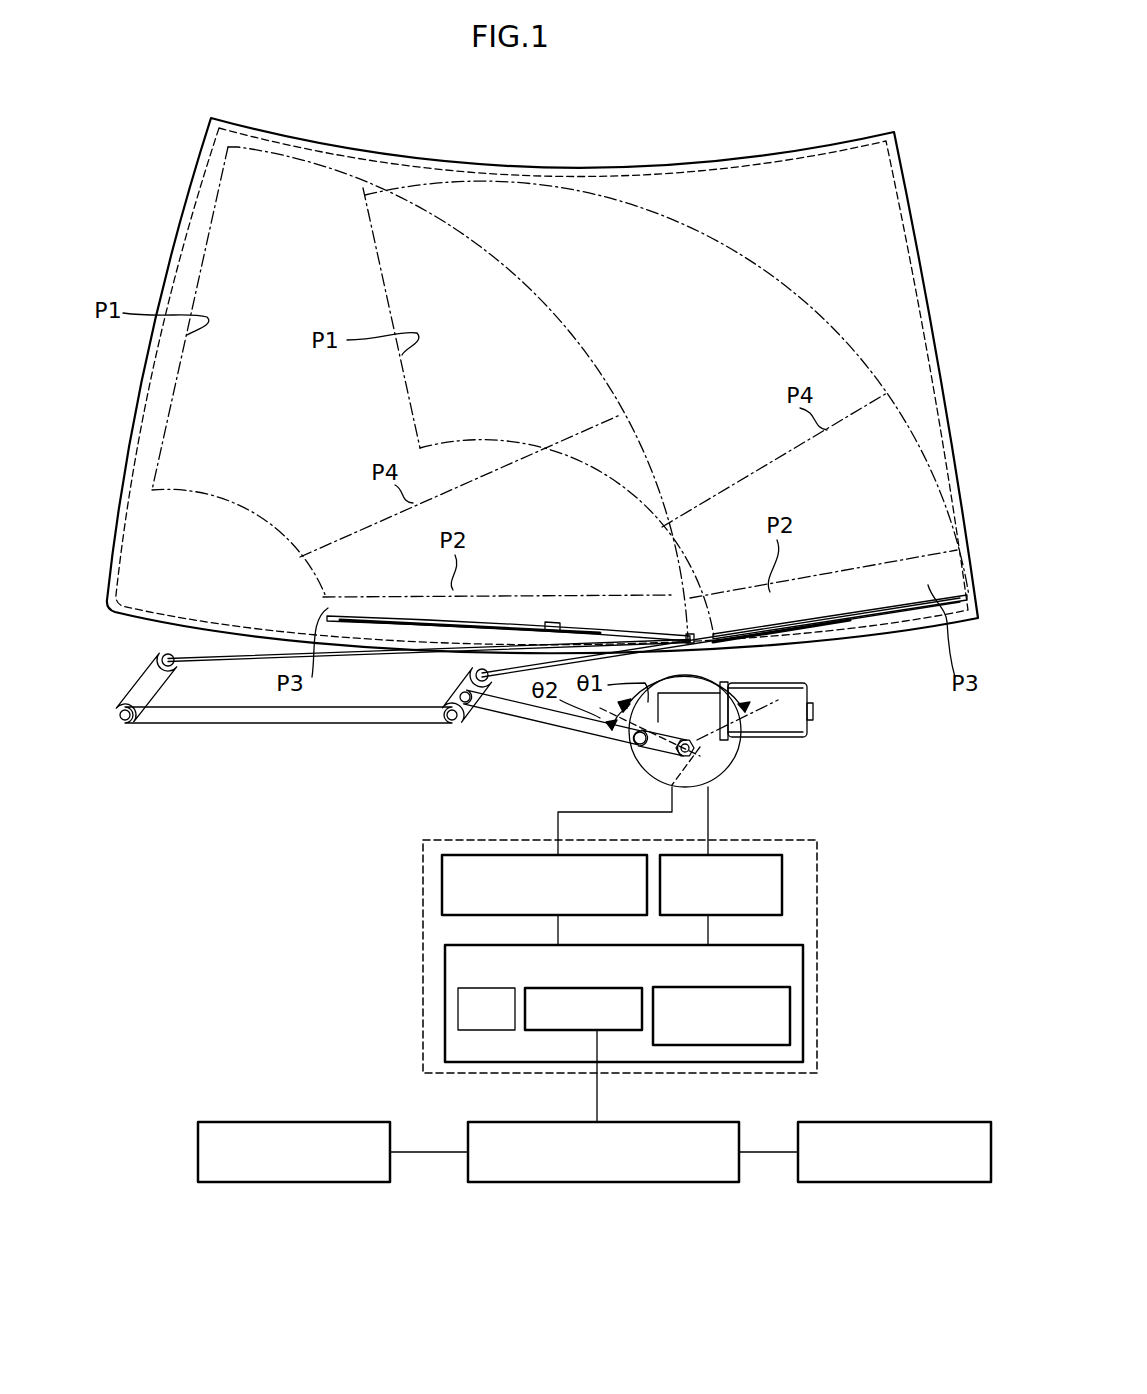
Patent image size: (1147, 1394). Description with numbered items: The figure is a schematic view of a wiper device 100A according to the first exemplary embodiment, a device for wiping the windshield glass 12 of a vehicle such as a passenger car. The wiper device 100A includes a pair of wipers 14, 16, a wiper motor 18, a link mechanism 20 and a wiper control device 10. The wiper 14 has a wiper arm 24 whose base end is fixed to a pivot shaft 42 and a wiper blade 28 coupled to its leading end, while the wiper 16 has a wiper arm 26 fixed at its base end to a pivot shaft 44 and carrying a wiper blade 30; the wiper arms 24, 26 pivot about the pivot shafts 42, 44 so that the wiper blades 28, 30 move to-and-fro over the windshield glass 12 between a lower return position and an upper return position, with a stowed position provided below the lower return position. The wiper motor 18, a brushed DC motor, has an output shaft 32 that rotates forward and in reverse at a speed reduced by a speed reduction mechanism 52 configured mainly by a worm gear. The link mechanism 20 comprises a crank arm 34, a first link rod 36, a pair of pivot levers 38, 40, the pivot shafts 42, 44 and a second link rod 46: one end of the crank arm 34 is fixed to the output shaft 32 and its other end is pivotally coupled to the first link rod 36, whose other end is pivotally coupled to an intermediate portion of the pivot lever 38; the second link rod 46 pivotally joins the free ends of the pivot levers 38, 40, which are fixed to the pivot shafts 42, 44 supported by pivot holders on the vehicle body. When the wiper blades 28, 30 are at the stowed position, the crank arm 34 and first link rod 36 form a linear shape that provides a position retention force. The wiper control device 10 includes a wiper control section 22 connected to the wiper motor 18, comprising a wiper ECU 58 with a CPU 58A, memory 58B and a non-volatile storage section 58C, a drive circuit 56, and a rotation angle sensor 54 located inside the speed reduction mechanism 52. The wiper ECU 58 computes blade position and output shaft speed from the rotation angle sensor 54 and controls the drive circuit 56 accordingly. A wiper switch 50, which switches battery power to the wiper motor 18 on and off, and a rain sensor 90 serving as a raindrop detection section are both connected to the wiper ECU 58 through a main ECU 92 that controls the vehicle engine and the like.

The wiper control device 10 is at (686, 918).
The windshield glass 12 is at (580, 167).
The wiper 14 is at (907, 600).
The wiper 16 is at (603, 628).
The wiper motor 18 is at (766, 731).
The link mechanism 20 is at (436, 729).
The wiper control section 22 is at (817, 950).
The wiper arm 24 is at (697, 636).
The wiper arm 26 is at (220, 653).
The wiper blade 28 is at (853, 610).
The wiper blade 30 is at (550, 624).
The output shaft 32 is at (710, 765).
The crank arm 34 is at (630, 750).
The first link rod 36 is at (545, 722).
The pivot lever 38 is at (460, 697).
The pivot lever 40 is at (140, 690).
The pivot shaft 42 is at (475, 672).
The pivot shaft 44 is at (160, 658).
The second link rod 46 is at (297, 724).
The wiper switch 50 is at (198, 1152).
The speed reduction mechanism 52 is at (700, 750).
The rotation angle sensor 54 is at (486, 855).
The drive circuit 56 is at (782, 883).
The wiper ECU 58 is at (620, 1029).
The CPU 58A is at (458, 1010).
The memory 58B is at (565, 1031).
The non-volatile storage section 58C is at (745, 1046).
The rain sensor 90 is at (885, 1183).
The main ECU 92 is at (600, 1183).
The wiper device 100A is at (740, 134).